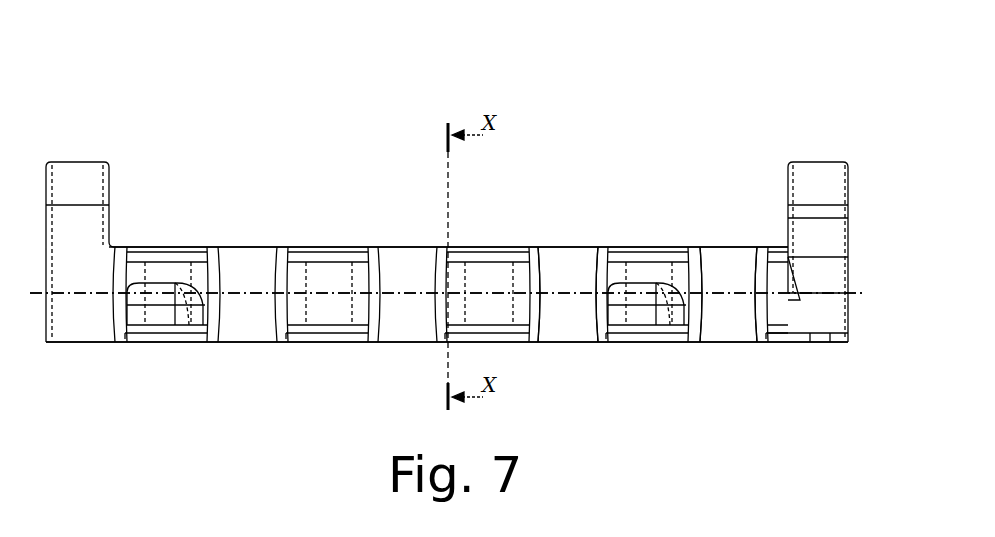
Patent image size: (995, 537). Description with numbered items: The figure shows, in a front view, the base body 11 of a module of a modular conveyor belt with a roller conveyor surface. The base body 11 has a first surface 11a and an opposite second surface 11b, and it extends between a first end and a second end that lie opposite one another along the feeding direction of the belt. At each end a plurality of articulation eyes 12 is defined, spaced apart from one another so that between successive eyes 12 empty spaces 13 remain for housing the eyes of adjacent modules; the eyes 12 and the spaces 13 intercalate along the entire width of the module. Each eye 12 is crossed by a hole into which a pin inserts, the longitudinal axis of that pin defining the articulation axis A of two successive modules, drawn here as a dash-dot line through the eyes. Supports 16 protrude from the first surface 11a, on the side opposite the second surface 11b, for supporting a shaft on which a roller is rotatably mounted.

The base body 11 is at (762, 135).
The first surface 11a is at (157, 245).
The second surface 11b is at (325, 342).
The articulation eye 12 is at (558, 332).
The empty space 13 is at (653, 333).
The support 16 is at (78, 183).
The articulation axis A is at (852, 292).